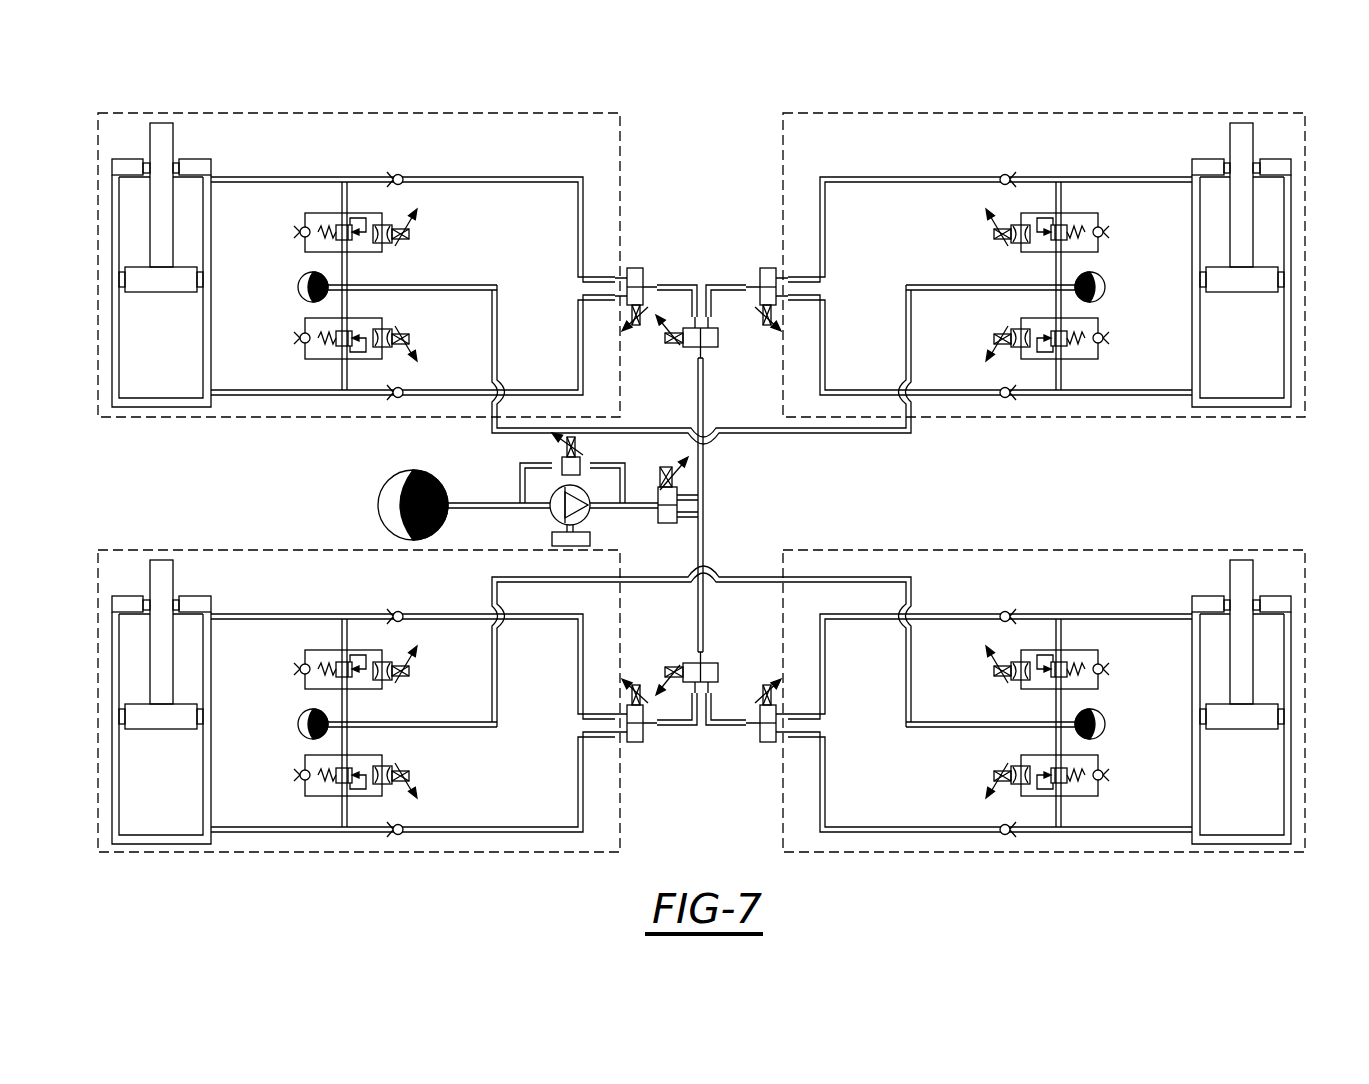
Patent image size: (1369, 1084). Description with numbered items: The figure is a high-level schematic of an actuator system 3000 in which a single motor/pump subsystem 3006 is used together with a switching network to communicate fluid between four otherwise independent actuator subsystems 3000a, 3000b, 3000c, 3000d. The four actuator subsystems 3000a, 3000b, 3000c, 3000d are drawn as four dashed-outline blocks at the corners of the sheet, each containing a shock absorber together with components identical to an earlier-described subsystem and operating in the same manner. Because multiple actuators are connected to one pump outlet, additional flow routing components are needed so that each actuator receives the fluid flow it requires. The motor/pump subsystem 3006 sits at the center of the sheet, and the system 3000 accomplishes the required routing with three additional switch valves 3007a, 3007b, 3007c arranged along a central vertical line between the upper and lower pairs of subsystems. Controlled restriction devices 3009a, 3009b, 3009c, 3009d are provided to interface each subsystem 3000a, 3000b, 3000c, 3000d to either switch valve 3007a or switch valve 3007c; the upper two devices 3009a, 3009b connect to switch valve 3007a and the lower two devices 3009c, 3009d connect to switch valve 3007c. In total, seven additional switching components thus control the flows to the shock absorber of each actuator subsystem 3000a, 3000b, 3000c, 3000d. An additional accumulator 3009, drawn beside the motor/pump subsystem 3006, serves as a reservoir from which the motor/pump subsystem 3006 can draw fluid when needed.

The actuator system 3000 is at (708, 192).
The actuator subsystem 3000a is at (235, 110).
The actuator subsystem 3000b is at (1168, 110).
The actuator subsystem 3000c is at (235, 855).
The actuator subsystem 3000d is at (1168, 855).
The motor/pump subsystem 3006 is at (555, 493).
The switch valve 3007a is at (718, 338).
The switch valve 3007b is at (663, 523).
The switch valve 3007c is at (718, 675).
The accumulator 3009 is at (378, 506).
The controlled restriction device 3009a is at (637, 268).
The controlled restriction device 3009b is at (766, 268).
The controlled restriction device 3009c is at (637, 742).
The controlled restriction device 3009d is at (766, 742).